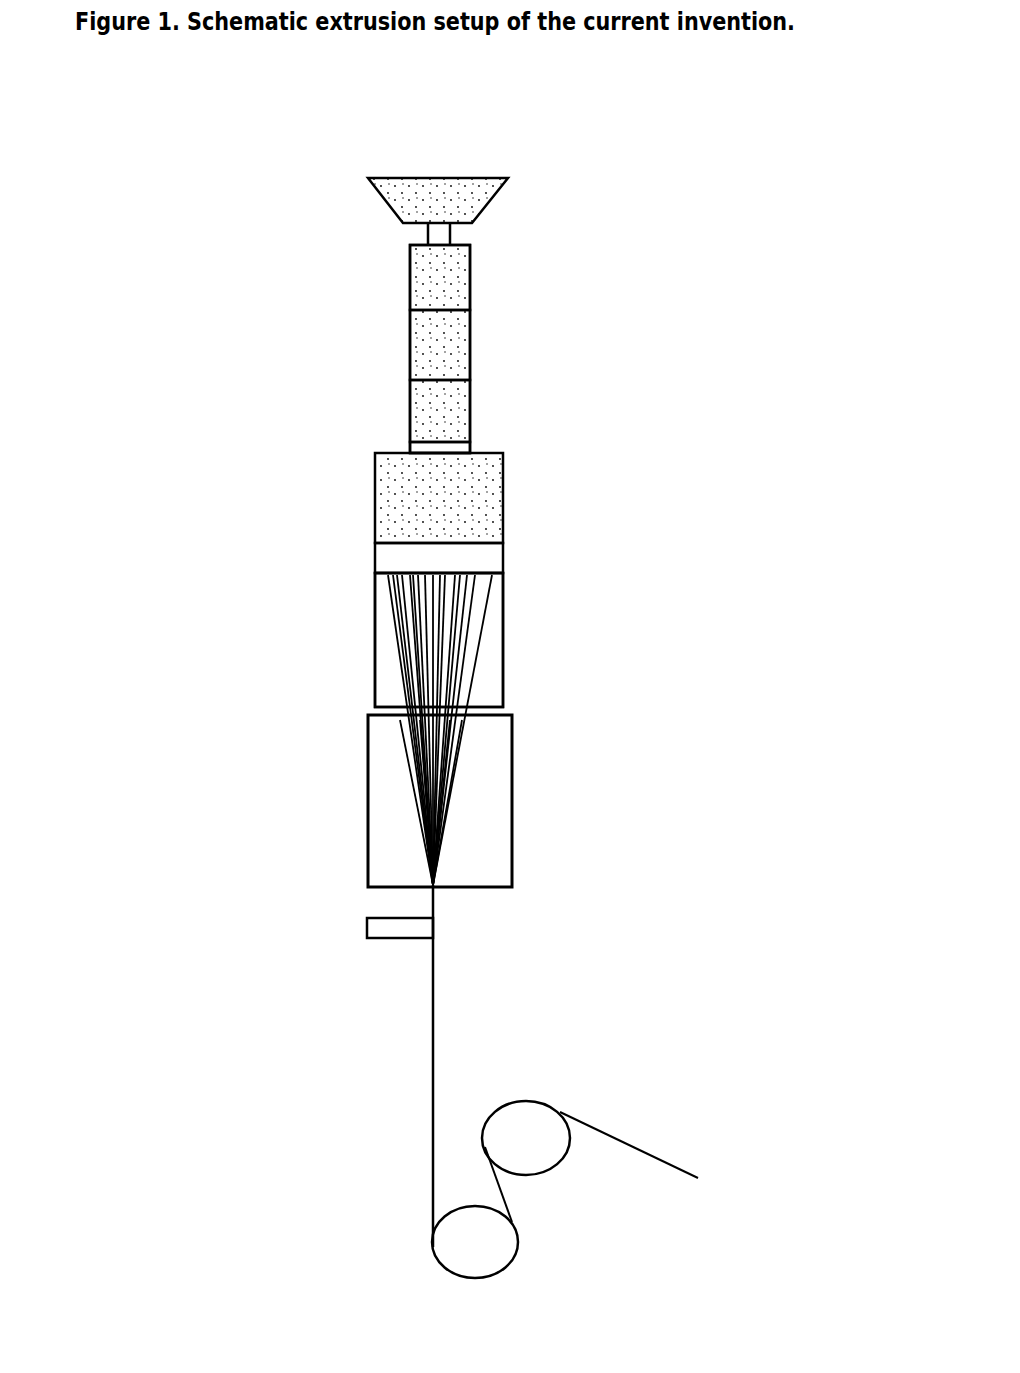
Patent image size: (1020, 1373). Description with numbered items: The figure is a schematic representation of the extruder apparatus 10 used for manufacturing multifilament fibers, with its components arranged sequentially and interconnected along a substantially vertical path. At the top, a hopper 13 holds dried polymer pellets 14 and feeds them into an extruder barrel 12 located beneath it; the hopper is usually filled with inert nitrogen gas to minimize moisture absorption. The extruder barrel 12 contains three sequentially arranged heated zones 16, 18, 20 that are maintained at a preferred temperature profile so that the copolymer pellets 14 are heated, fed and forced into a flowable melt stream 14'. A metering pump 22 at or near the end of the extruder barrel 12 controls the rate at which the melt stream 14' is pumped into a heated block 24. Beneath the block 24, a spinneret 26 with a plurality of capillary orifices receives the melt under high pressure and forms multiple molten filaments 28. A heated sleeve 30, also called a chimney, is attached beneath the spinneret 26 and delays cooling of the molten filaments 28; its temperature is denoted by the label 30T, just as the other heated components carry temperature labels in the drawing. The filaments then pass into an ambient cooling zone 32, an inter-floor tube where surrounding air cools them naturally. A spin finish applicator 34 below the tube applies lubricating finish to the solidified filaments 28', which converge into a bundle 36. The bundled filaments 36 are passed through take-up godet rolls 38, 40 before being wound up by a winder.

The extruder apparatus 10 is at (292, 198).
The extruder barrel 12 is at (368, 248).
The hopper 13 is at (493, 197).
The dried polymer pellets 14 is at (411, 164).
The flowable melt stream 14' is at (345, 475).
The first heated zone 16 is at (470, 275).
The second heated zone 18 is at (470, 340).
The third heated zone 20 is at (470, 405).
The metering pump 22 is at (470, 453).
The heated block 24 is at (503, 505).
The spinneret 26 is at (503, 553).
The molten filaments 28 is at (376, 730).
The solidified filaments 28' is at (498, 802).
The heated sleeve 30 is at (375, 675).
The heated sleeve temperature 30T is at (503, 678).
The ambient cooling zone 32 is at (368, 795).
The spin finish applicator 34 is at (367, 928).
The bundle of filaments 36 is at (433, 1050).
The take-up godet roll 38 is at (528, 1103).
The take-up godet roll 40 is at (497, 1262).